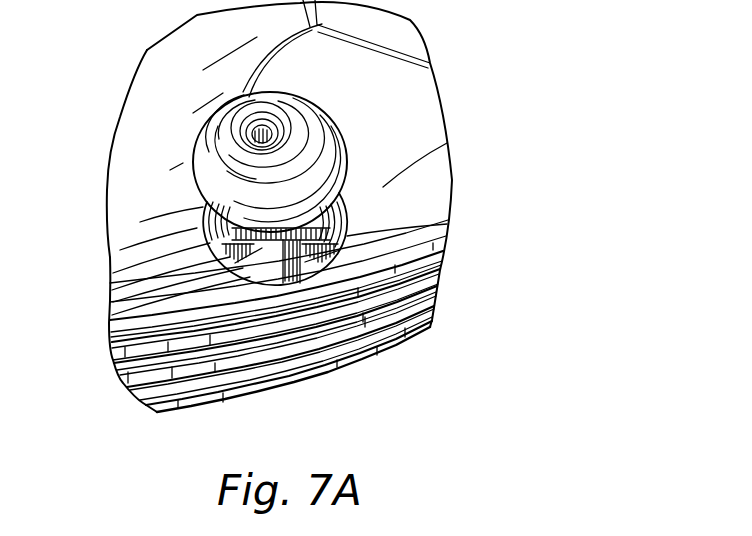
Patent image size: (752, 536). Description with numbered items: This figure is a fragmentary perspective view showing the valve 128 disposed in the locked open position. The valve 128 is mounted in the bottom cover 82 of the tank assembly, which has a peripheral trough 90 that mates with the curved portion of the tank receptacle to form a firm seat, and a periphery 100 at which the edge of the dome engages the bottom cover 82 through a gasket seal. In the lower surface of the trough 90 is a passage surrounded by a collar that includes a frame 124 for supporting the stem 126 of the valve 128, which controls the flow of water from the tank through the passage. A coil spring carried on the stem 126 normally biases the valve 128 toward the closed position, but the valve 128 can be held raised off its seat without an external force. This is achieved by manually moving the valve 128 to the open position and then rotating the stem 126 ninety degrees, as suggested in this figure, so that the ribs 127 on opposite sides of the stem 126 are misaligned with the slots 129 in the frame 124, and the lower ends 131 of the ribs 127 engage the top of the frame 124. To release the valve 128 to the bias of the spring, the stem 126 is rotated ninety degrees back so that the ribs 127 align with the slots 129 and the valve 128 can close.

The bottom cover 82 is at (108, 229).
The peripheral trough 90 is at (127, 273).
The periphery 100 is at (127, 338).
The frame 124 is at (338, 262).
The stem 126 is at (257, 232).
The ribs 127 is at (292, 262).
The valve 128 is at (350, 144).
The slots 129 is at (293, 270).
The lower ends 131 is at (275, 255).